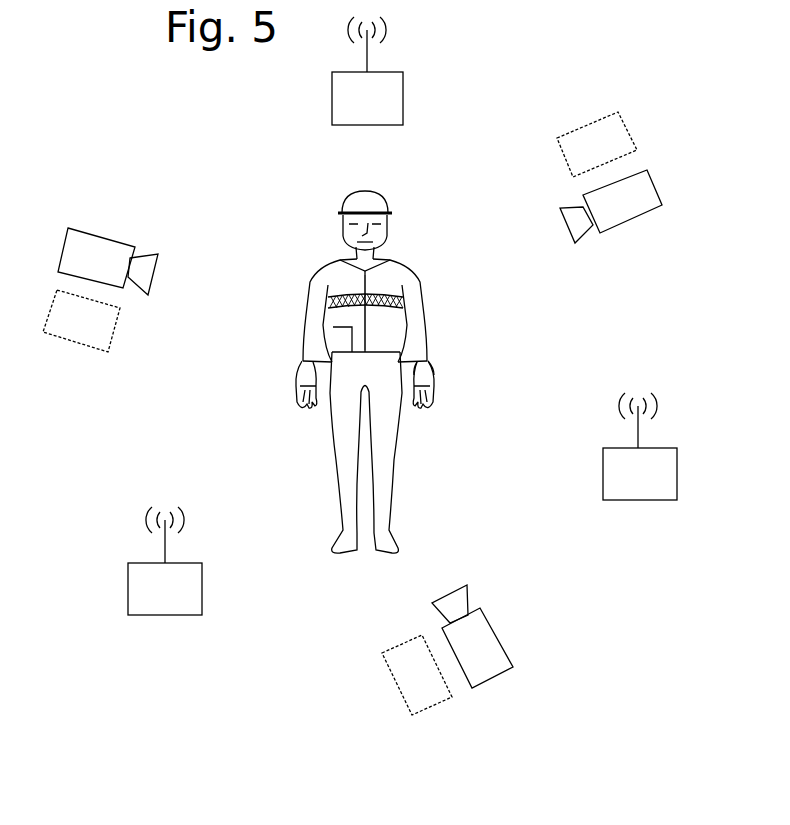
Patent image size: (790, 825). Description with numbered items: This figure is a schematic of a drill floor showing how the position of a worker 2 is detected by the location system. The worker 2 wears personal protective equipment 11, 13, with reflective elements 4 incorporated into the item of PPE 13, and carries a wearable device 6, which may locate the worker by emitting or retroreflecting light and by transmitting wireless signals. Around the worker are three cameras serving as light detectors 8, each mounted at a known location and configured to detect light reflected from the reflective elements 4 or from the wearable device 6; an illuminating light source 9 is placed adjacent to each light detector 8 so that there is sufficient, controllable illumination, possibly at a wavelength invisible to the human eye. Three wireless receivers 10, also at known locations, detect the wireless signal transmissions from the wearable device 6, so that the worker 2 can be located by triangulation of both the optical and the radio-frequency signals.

The worker 2 is at (279, 280).
The reflective elements 4 is at (380, 296).
The wearable device 6 is at (347, 342).
The light detector 8 is at (100, 230).
The illuminating light source 9 is at (73, 343).
The wireless receiver 10 is at (405, 95).
The personal protective equipment 11 is at (432, 375).
The item of PPE 13 is at (387, 330).